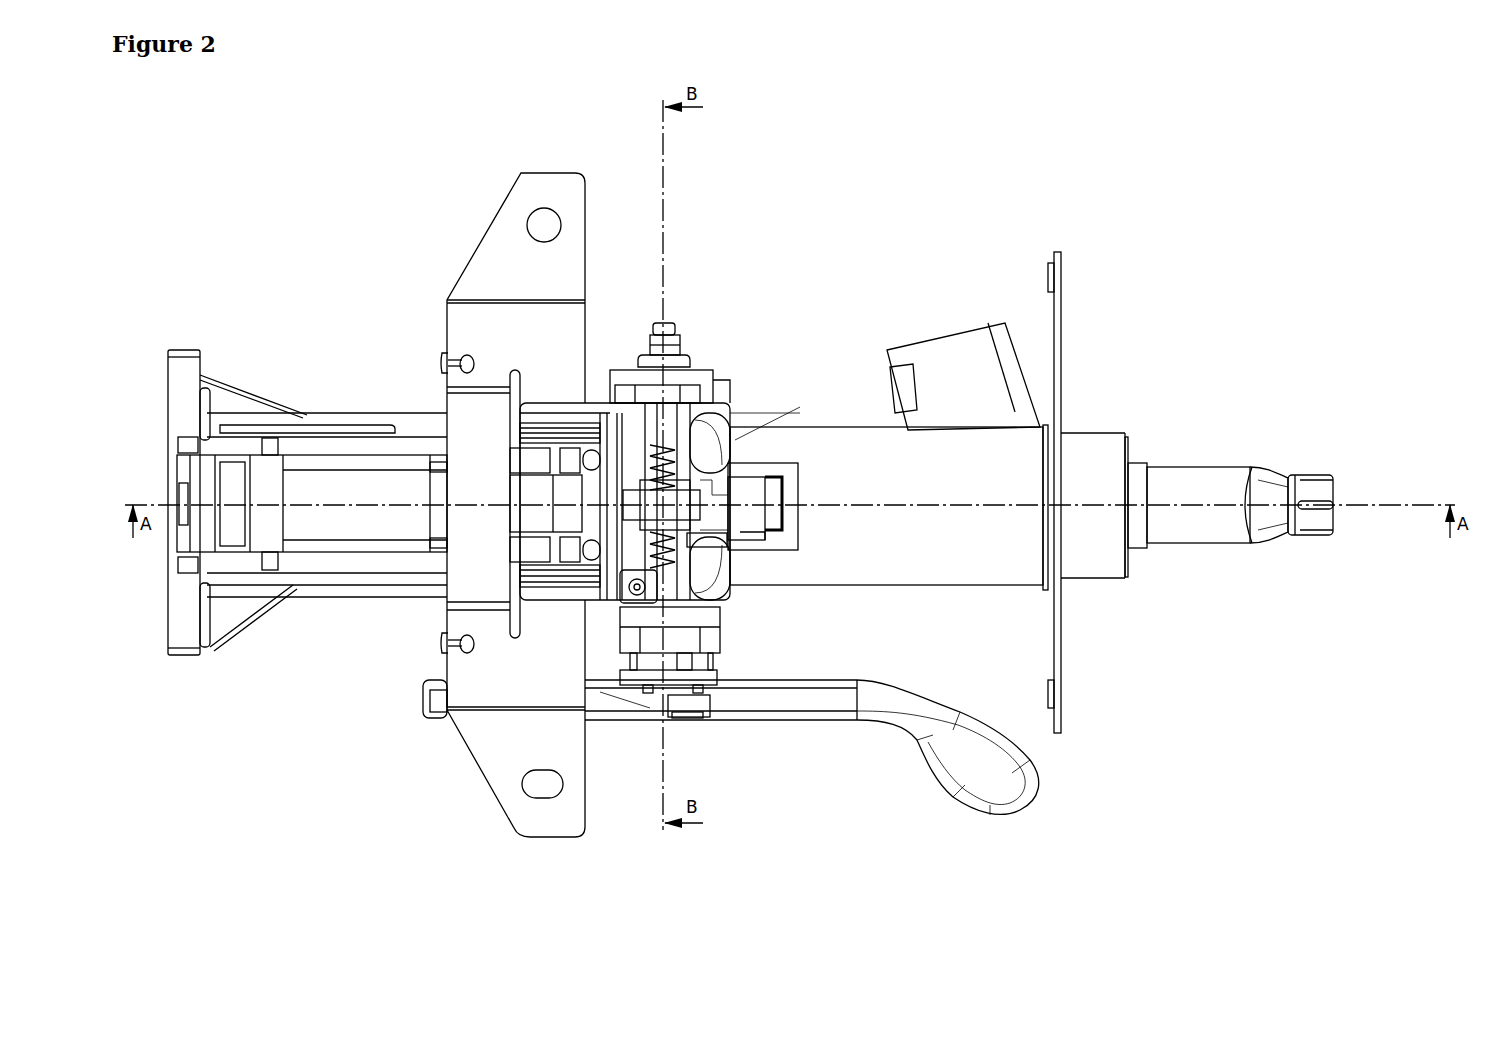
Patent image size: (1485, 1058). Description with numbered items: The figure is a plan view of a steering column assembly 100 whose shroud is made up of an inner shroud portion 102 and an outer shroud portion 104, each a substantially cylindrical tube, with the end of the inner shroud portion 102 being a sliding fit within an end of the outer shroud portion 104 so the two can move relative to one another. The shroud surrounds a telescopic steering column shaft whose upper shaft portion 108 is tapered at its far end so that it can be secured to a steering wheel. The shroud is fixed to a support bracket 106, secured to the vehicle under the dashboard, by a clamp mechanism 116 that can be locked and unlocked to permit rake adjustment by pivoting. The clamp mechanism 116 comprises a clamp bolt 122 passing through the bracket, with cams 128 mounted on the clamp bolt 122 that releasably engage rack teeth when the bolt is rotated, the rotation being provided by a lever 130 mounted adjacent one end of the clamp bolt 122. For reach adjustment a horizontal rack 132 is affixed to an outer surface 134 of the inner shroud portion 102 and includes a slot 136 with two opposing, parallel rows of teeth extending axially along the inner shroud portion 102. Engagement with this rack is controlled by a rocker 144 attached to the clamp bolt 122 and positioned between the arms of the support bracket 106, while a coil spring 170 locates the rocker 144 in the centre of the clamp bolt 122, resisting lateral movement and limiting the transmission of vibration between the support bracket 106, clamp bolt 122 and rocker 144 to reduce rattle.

The steering column assembly 100 is at (1064, 150).
The inner shroud portion 102 is at (1015, 485).
The outer shroud portion 104 is at (325, 420).
The support bracket 106 is at (492, 343).
The upper shaft portion 108 is at (1228, 490).
The clamp mechanism 116 is at (685, 338).
The clamp bolt 122 is at (670, 477).
The cams 128 is at (660, 617).
The lever 130 is at (985, 765).
The horizontal rack 132 is at (797, 500).
The outer surface 134 is at (1005, 440).
The slot 136 is at (712, 487).
The rocker 144 is at (663, 520).
The coil spring 170 is at (670, 457).